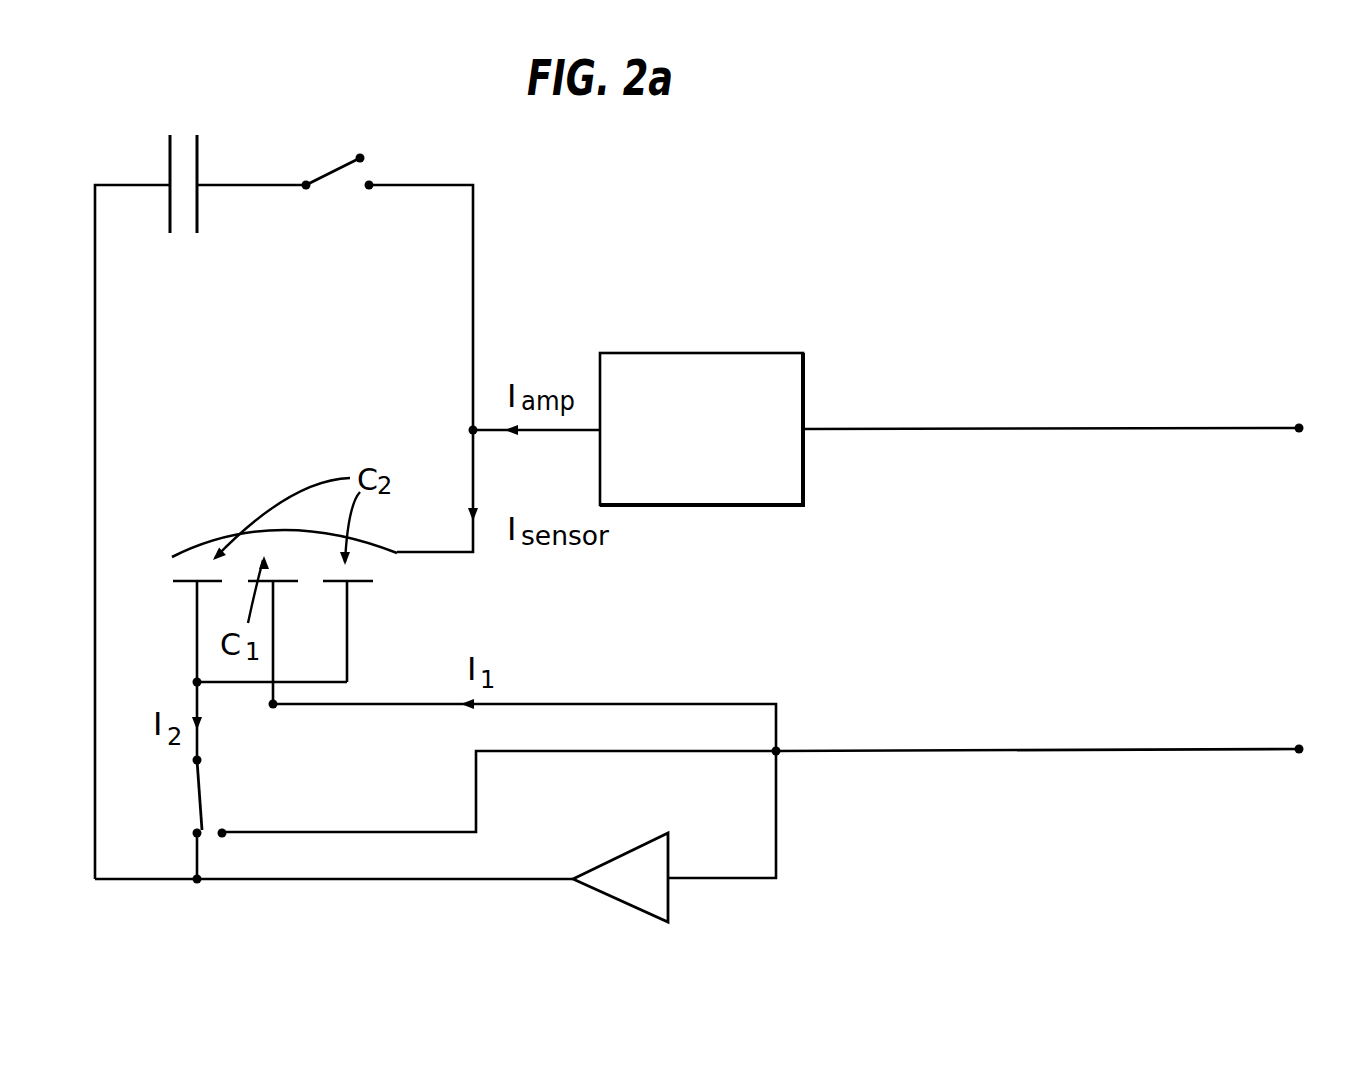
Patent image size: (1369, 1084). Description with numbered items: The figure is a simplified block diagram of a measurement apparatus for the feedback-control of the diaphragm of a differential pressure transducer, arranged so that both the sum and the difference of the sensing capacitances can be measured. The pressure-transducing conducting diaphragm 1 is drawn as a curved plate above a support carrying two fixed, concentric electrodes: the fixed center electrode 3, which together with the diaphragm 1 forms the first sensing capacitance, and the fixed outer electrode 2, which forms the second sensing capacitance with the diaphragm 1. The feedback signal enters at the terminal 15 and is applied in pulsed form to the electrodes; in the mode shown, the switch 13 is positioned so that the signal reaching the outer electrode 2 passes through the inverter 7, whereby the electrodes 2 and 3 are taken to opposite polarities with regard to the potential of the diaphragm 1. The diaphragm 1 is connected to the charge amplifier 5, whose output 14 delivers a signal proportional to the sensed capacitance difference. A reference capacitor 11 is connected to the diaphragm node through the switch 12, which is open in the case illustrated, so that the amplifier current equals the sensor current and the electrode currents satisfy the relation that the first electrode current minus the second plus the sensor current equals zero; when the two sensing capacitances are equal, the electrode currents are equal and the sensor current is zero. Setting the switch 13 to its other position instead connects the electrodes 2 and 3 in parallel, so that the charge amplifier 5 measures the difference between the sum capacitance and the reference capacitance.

The pressure-transducing conducting diaphragm 1 is at (200, 540).
The fixed outer electrode 2 is at (183, 585).
The fixed center electrode 3 is at (278, 583).
The charge amplifier 5 is at (707, 353).
The inverter 7 is at (653, 917).
The reference capacitor 11 is at (197, 212).
The switch 12 is at (322, 172).
The switch 13 is at (198, 808).
The output 14 is at (1303, 425).
The terminal 15 is at (1303, 746).